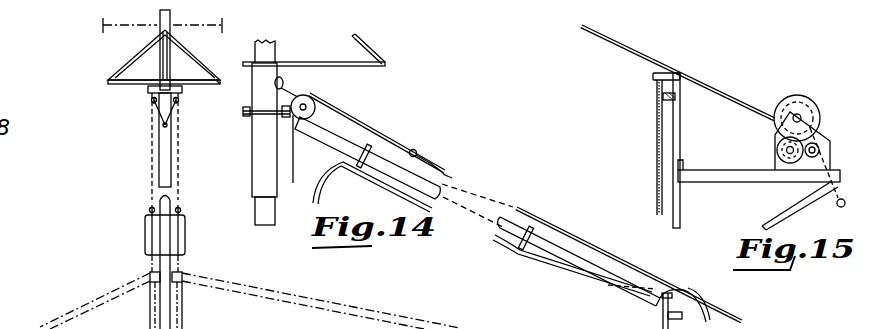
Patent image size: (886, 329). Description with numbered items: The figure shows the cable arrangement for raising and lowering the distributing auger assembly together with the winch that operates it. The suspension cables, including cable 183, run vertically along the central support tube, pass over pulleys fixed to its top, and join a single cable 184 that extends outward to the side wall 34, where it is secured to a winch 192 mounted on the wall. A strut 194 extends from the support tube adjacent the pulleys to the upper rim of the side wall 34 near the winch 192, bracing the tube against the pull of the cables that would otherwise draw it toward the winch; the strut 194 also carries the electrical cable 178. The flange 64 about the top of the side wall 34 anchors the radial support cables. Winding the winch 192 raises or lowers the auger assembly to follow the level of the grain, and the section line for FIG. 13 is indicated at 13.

In FIG. 14, the section line 13- 13 is at (162, 27).
In FIG. 14, the side wall 34 is at (662, 326).
In FIG. 15, the side wall 34 is at (657, 137).
In FIG. 14, the flange 64 is at (677, 290).
In FIG. 15, the flange 64 is at (672, 72).
In FIG. 14, the electrical cable 178 is at (325, 185).
In FIG. 14, the cable 183 is at (388, 140).
In FIG. 15, the single cable 184 is at (648, 56).
In FIG. 15, the winch 192 is at (829, 117).
In FIG. 14, the strut 194 is at (437, 181).